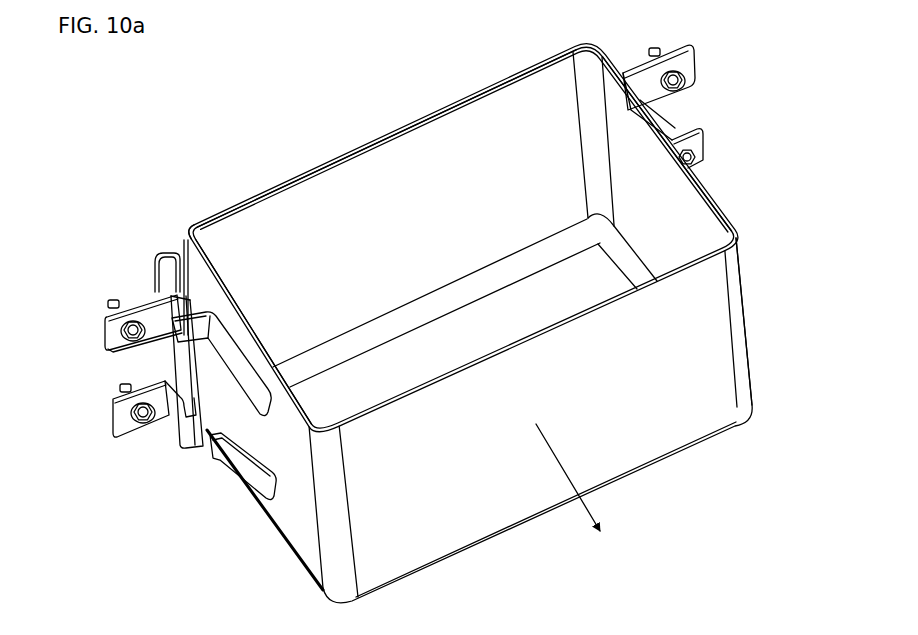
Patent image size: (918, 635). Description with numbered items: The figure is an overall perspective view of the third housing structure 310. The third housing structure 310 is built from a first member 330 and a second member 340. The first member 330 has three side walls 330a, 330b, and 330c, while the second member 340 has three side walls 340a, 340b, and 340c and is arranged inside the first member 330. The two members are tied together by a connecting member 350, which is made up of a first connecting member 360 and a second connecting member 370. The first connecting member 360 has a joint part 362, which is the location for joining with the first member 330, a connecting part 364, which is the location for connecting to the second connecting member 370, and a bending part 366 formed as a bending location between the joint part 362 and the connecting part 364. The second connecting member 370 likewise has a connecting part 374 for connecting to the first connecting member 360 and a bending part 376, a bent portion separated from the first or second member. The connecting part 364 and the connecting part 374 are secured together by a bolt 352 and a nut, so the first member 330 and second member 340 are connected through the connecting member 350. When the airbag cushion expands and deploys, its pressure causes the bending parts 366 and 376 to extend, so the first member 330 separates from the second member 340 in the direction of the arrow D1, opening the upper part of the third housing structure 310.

The third housing structure 310 is at (224, 105).
The first member 330 is at (636, 487).
The side wall 330a is at (258, 492).
The side wall 330b is at (430, 548).
The side wall 330c is at (712, 193).
The second member 340 is at (253, 184).
The side wall 340a is at (232, 320).
The side wall 340b is at (396, 130).
The side wall 340c is at (625, 100).
The connecting member 350 is at (114, 277).
The bolt 352 is at (121, 335).
The first connecting member 360 is at (108, 360).
The joint part 362 is at (232, 470).
The connecting part 364 is at (157, 335).
The bending part 366 is at (200, 345).
The second connecting member 370 is at (148, 260).
The connecting part 374 is at (108, 316).
The bending part 376 is at (166, 243).
The arrow D1 is at (560, 447).